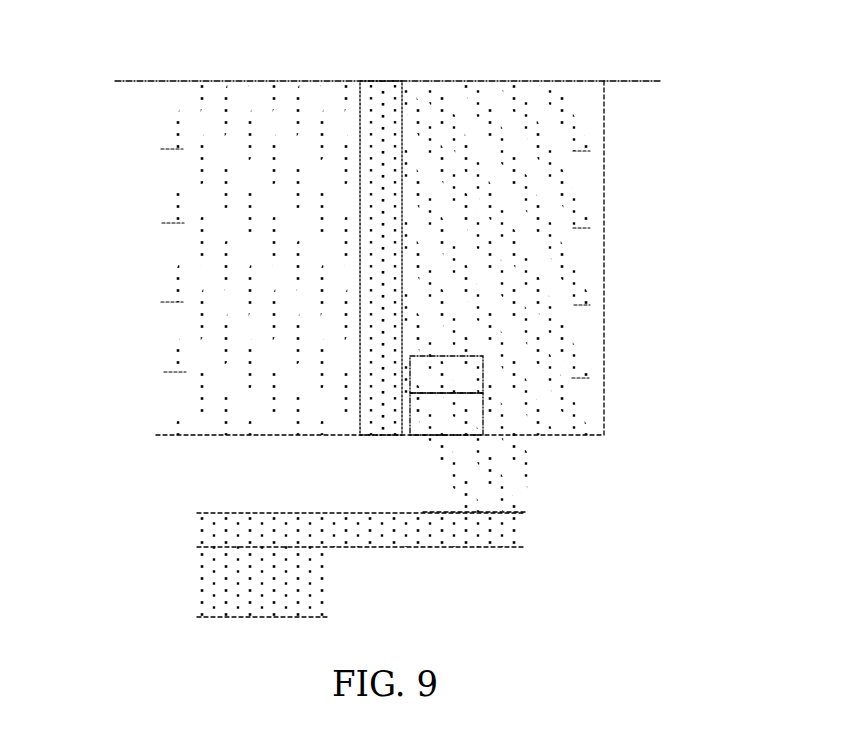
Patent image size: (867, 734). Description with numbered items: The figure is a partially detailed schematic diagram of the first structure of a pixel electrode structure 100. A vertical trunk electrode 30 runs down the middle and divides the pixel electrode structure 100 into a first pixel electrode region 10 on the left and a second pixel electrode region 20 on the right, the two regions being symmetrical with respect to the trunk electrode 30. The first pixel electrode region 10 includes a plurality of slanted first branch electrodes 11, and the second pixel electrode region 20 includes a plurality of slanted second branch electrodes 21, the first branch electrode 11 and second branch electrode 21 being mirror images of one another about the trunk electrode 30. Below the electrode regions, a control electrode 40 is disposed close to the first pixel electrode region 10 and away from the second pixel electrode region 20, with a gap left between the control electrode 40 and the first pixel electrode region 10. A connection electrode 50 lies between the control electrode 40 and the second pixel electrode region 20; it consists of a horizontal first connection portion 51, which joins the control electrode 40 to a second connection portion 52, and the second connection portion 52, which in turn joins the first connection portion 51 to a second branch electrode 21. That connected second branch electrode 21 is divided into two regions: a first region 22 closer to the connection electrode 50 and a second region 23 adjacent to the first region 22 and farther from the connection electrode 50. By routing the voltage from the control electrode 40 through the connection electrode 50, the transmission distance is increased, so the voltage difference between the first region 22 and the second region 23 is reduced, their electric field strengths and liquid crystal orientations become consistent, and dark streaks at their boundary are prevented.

The pixel electrode structure 100 is at (226, 53).
The first pixel electrode region 10 is at (155, 236).
The first branch electrode 11 is at (163, 303).
The second pixel electrode region 20 is at (605, 240).
The second branch electrode 21 is at (605, 310).
The first region 22 is at (483, 418).
The second region 23 is at (483, 367).
The trunk electrode 30 is at (385, 80).
The control electrode 40 is at (327, 605).
The connection electrode 50 is at (469, 491).
The first connection portion 51 is at (523, 540).
The second connection portion 52 is at (528, 472).